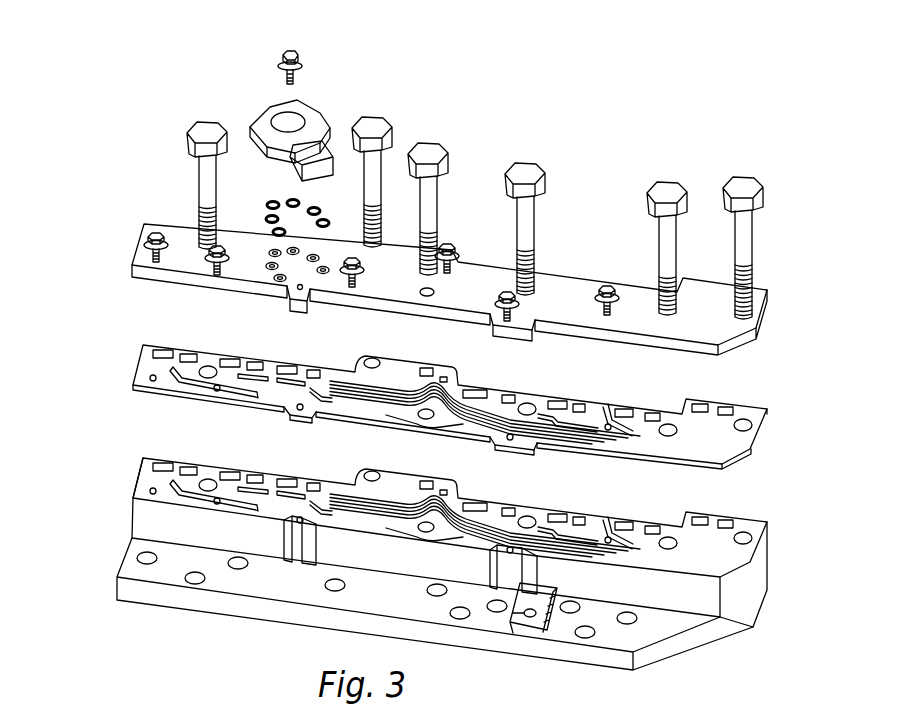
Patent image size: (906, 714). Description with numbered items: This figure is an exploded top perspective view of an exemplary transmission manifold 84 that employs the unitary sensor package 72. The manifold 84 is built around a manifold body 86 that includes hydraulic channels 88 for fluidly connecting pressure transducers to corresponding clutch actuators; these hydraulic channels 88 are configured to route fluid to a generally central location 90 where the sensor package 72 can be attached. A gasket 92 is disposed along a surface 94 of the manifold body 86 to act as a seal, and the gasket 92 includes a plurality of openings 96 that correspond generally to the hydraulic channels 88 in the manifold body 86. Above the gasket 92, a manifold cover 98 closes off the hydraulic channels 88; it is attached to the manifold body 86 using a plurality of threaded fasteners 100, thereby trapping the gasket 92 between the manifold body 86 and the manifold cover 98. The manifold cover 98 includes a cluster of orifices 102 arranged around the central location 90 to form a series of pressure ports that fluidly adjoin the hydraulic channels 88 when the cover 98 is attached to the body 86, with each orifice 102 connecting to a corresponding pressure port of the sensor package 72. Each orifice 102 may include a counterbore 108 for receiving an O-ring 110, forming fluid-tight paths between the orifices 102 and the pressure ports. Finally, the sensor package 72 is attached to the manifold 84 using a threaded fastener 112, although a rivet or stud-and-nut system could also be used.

The manifold 84 is at (125, 212).
The manifold body 86 is at (243, 612).
The surface 94 is at (705, 553).
The central location 90 is at (283, 508).
The hydraulic channels 88 is at (463, 515).
The gasket 92 is at (653, 452).
The openings 96 is at (457, 418).
The manifold cover 98 is at (630, 343).
The counterbore 108 is at (313, 258).
The O-ring 110 is at (286, 203).
The orifices 102 is at (325, 266).
The sensor package 72 is at (305, 108).
The threaded fastener 112 is at (292, 46).
The threaded fasteners 100 is at (607, 288).